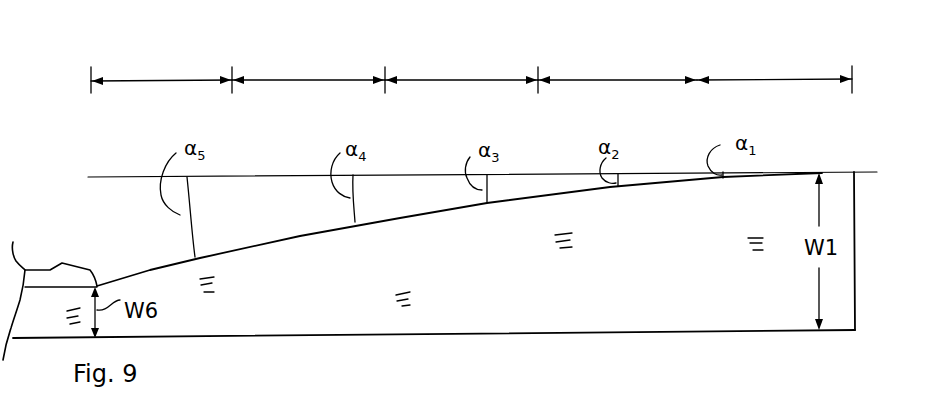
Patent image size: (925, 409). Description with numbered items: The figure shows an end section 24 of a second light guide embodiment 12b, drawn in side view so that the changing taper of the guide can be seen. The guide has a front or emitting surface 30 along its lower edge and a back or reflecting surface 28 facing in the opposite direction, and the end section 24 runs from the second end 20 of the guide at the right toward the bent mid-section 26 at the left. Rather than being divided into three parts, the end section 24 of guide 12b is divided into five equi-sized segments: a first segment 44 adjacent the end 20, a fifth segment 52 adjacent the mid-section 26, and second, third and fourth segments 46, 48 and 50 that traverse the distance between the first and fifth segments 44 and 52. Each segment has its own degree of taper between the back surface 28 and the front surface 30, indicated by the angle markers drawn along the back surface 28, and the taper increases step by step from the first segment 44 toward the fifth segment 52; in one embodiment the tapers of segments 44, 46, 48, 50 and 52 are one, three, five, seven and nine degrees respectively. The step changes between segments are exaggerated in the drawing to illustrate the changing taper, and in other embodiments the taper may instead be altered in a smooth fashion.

The light guide 12b is at (438, 345).
The second end 20 is at (853, 247).
The second end section 24 is at (549, 345).
The mid-section 26 is at (60, 262).
The back surface 28 is at (150, 268).
The front surface 30 is at (277, 337).
The first segment 44 is at (750, 80).
The second segment 46 is at (618, 80).
The third segment 48 is at (468, 80).
The fourth segment 50 is at (315, 80).
The fifth segment 52 is at (180, 80).